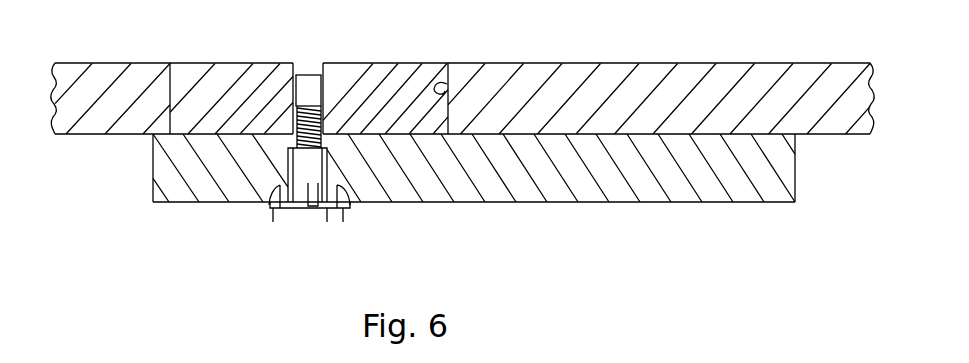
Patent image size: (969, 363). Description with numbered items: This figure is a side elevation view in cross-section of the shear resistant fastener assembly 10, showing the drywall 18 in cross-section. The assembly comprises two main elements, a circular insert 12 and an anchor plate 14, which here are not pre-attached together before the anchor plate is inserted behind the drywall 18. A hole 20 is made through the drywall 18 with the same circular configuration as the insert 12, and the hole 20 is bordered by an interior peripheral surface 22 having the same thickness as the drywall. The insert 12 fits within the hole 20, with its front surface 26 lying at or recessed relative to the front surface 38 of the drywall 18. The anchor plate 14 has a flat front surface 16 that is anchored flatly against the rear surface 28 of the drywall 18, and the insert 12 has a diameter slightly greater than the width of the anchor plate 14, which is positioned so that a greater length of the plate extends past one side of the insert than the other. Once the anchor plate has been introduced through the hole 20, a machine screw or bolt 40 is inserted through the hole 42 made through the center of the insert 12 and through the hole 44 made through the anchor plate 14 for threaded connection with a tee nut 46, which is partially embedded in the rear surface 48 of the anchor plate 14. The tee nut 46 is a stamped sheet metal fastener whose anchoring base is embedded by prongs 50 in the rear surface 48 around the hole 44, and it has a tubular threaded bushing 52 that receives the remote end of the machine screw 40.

The shear resistant fastener assembly 10 is at (205, 226).
The insert 12 is at (417, 63).
The anchor plate 14 is at (650, 203).
The flat front surface 16 is at (767, 134).
The drywall 18 is at (757, 63).
The hole 20 is at (450, 84).
The interior peripheral surface 22 is at (175, 103).
The front surface of the circular insert 26 is at (220, 63).
The rear surface of the drywall 28 is at (843, 134).
The front surface of the drywall 38 is at (587, 63).
The machine screw or bolt 40 is at (306, 80).
The hole through the center of the insert 42 is at (323, 93).
The hole through the anchor plate 44 is at (327, 147).
The tee nut 46 is at (278, 210).
The rear surface of the anchor plate 48 is at (480, 203).
The prongs 50 is at (341, 200).
The tubular threaded bushing 52 is at (325, 209).